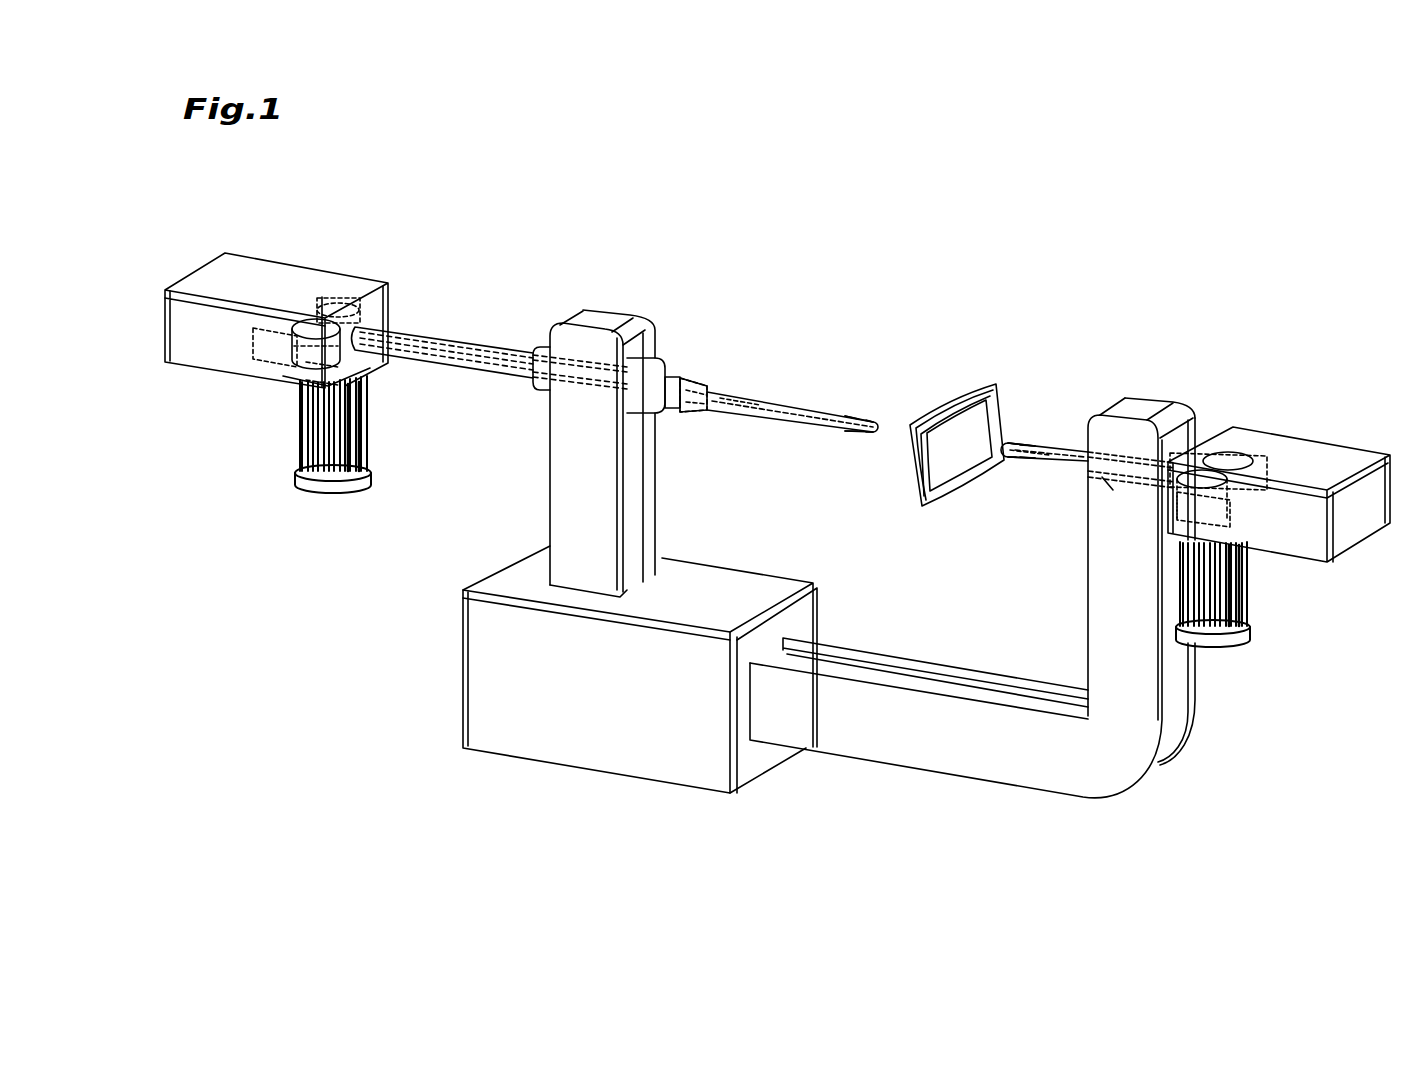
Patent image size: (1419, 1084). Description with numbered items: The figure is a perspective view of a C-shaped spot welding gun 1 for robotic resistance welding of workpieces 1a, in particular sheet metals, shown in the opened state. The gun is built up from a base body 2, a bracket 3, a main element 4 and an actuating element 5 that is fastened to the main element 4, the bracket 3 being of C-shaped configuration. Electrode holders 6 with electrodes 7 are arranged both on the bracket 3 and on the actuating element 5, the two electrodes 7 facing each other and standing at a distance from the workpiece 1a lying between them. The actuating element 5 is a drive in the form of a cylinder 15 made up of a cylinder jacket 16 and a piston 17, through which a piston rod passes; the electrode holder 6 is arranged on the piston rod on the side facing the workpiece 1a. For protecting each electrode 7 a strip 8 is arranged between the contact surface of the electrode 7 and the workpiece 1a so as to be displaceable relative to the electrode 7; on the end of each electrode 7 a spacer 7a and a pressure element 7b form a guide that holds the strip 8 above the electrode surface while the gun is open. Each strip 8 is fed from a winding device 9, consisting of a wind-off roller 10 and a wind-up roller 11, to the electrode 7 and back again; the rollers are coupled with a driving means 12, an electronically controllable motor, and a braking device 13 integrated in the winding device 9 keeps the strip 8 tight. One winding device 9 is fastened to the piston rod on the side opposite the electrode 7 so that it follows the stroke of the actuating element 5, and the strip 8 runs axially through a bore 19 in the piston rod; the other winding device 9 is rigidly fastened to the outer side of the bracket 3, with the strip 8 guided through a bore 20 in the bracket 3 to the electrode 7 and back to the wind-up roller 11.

The spot welding gun 1 is at (313, 808).
The workpiece 1a is at (950, 400).
The base body 2 is at (563, 712).
The bracket 3 is at (918, 732).
The main element 4 is at (580, 493).
The actuating element 5 is at (887, 349).
The electrode holder 6 is at (780, 400).
The electrode 7 is at (868, 355).
The spacer 7a is at (875, 417).
The pressure element 7b is at (853, 417).
The strip 8 is at (312, 373).
The winding device 9 is at (363, 275).
The wind-off roller 10 is at (350, 307).
The wind-up roller 11 is at (313, 313).
The driving means 12 is at (323, 490).
The braking device 13 is at (283, 347).
The cylinder 15 is at (667, 327).
The cylinder jacket 16 is at (660, 363).
The piston 17 is at (668, 423).
The bore 19 is at (405, 330).
The bore 20 is at (1107, 480).